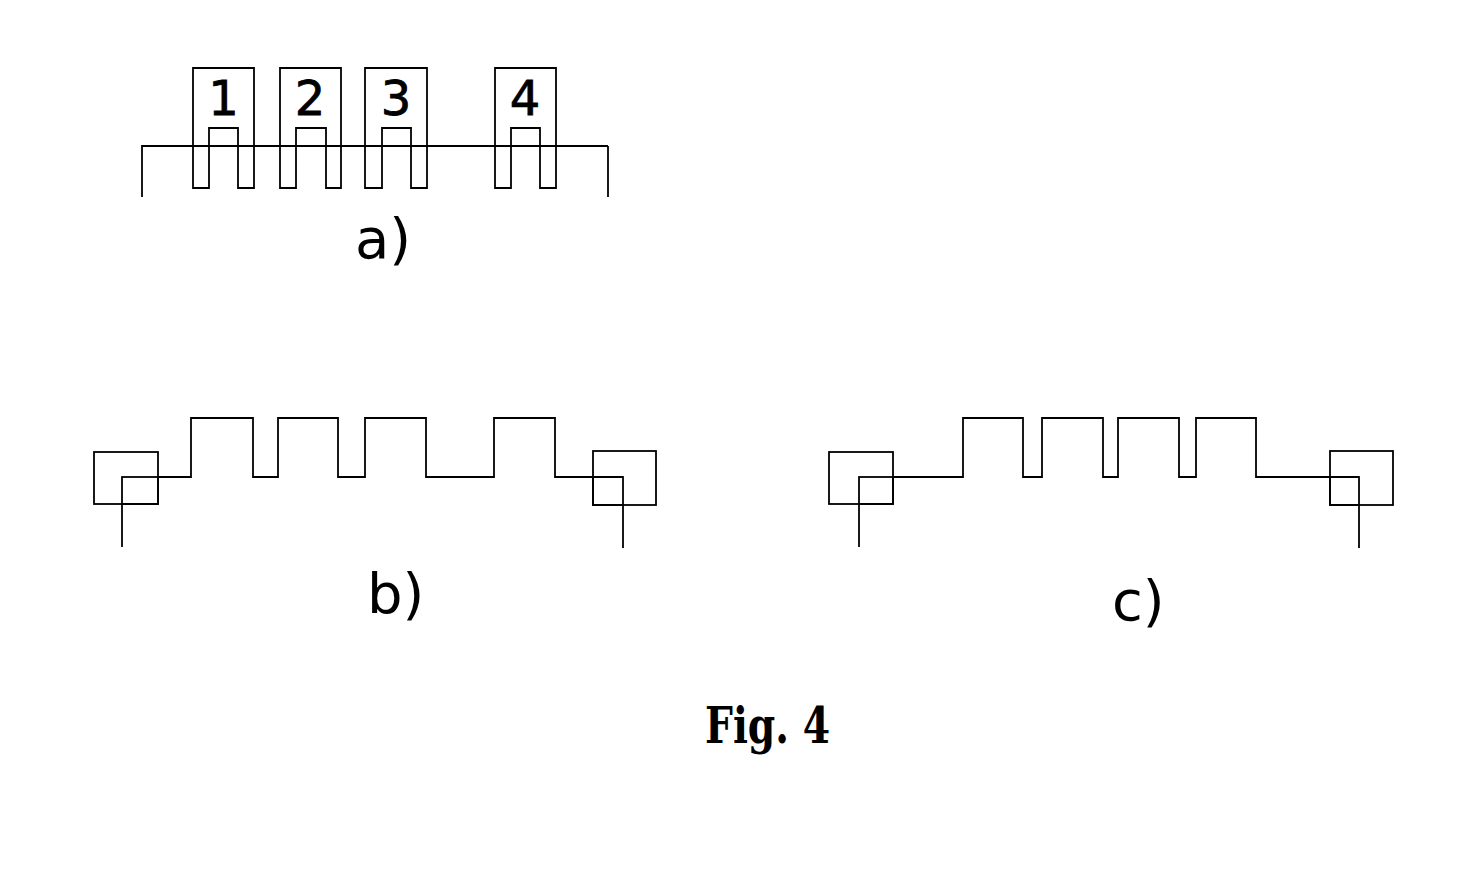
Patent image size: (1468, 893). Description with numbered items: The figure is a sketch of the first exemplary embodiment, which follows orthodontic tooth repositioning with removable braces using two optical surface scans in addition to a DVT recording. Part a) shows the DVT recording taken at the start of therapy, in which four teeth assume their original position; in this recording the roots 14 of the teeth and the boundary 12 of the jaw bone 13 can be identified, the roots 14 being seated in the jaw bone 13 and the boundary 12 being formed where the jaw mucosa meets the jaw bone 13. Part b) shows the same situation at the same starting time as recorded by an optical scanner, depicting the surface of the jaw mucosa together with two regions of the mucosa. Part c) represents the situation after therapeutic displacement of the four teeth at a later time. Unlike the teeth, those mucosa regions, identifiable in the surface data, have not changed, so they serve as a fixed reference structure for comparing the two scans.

The boundary 12 is at (608, 152).
The jaw bone 13 is at (592, 168).
The roots 14 is at (503, 179).